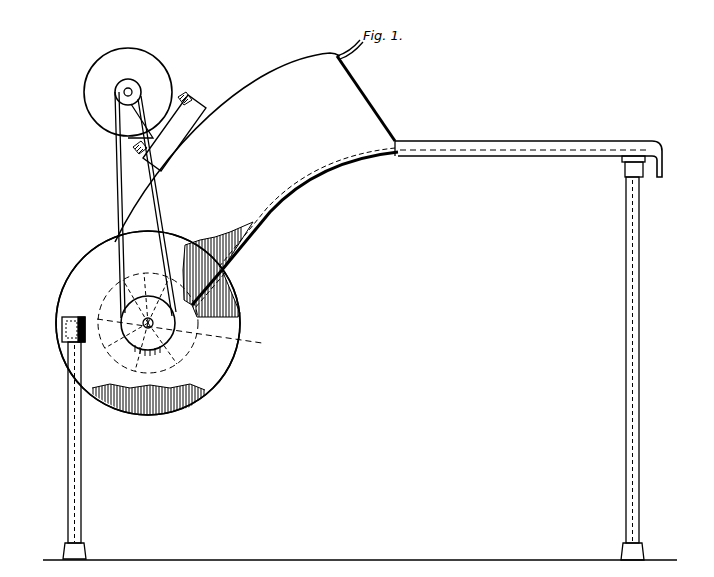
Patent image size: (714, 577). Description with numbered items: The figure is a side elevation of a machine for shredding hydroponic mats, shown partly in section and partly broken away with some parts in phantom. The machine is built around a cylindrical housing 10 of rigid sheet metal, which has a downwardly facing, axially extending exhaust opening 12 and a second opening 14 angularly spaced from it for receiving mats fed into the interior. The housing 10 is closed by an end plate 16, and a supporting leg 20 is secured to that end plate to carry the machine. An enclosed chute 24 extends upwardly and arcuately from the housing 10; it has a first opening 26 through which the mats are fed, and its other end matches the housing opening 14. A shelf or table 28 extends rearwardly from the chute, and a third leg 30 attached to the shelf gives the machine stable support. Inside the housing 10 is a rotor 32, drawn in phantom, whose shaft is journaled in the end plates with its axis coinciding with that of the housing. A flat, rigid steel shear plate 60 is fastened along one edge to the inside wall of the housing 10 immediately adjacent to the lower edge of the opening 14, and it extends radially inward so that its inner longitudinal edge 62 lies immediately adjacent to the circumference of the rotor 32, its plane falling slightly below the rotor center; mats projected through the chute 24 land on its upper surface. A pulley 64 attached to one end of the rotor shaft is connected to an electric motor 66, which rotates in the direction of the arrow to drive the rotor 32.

The cylindrical housing 10 is at (242, 364).
The exhaust opening 12 is at (157, 417).
The opening 14 is at (232, 244).
The end plate 16 is at (218, 374).
The supporting leg 20 is at (73, 481).
The enclosed chute 24 is at (268, 70).
The first opening 26 is at (375, 105).
The shelf or table 28 is at (540, 142).
The third leg 30 is at (626, 318).
The rotor 32 is at (100, 289).
The shear plate 60 is at (198, 297).
The inner longitudinal edge 62 is at (189, 336).
The pulley 64 is at (136, 318).
The electric motor 66 is at (157, 76).